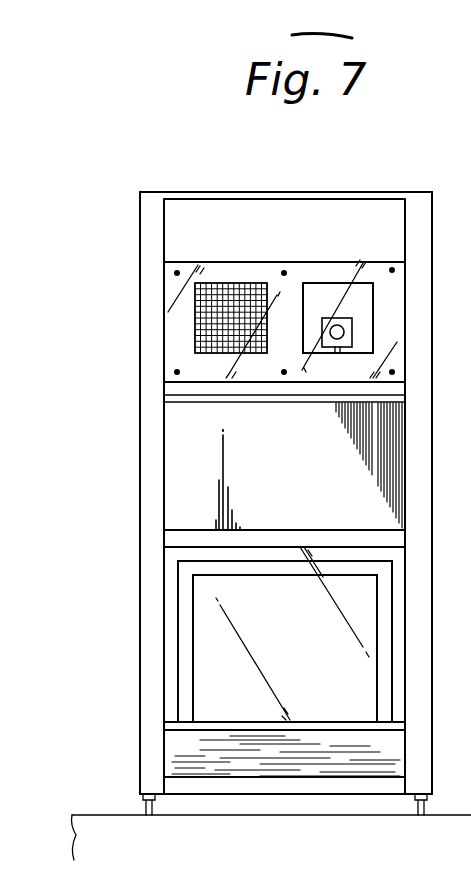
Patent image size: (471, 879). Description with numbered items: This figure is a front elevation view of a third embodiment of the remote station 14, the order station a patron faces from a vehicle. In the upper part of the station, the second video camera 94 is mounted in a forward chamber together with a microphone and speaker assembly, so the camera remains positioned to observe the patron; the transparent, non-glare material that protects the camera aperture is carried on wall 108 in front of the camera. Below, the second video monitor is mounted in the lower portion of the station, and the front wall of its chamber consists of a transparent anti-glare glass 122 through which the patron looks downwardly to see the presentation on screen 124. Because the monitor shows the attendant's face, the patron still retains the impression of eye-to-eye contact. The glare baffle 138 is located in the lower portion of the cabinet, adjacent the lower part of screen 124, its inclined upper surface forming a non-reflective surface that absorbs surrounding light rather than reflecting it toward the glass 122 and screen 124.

The remote station 14 is at (294, 190).
The wall 108 is at (188, 213).
The second video camera 94 is at (331, 355).
The transparent anti-glare glass 122 is at (210, 596).
The screen 124 is at (215, 651).
The glare baffle 138 is at (190, 752).